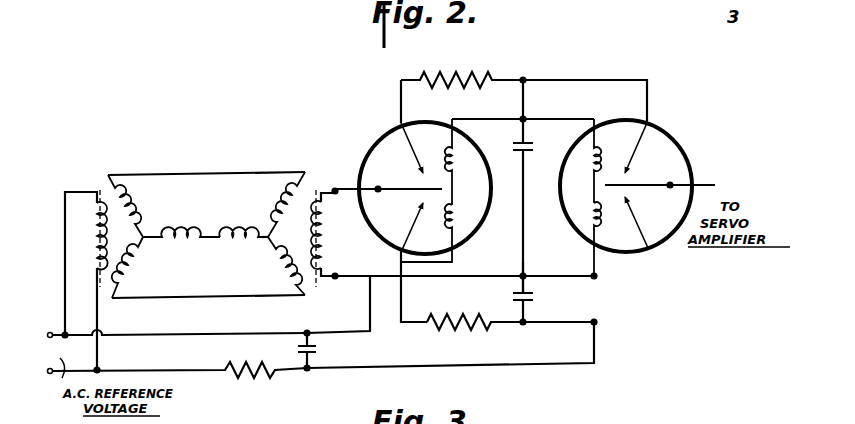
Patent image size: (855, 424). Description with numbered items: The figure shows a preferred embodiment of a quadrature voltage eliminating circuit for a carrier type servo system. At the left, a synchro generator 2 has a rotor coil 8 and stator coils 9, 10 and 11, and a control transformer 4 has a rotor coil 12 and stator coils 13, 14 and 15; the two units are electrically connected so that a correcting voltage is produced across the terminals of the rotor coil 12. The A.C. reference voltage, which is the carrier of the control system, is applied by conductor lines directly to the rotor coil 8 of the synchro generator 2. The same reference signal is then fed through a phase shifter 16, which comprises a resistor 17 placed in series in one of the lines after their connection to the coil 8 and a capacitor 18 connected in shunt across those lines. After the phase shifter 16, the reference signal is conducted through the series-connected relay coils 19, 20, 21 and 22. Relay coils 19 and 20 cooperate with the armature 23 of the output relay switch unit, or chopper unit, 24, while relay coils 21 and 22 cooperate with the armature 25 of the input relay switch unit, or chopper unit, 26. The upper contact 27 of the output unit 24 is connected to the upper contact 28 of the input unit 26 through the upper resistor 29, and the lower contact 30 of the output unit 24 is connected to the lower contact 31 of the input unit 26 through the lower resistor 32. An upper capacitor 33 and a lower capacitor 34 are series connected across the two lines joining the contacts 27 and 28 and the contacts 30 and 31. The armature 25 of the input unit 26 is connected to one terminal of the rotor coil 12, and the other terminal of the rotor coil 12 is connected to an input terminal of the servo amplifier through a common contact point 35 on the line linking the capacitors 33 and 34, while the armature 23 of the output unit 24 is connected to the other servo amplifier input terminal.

The synchro generator 2 is at (126, 250).
The control transformer 4 is at (298, 240).
The rotor coil 8 is at (99, 240).
The stator coil 9 is at (139, 266).
The stator coil 10 is at (180, 232).
The stator coil 11 is at (133, 207).
The rotor coil 12 is at (324, 232).
The stator coil 13 is at (284, 200).
The stator coil 14 is at (245, 232).
The stator coil 15 is at (282, 268).
The phase shifter 16 is at (258, 355).
The resistor 17 is at (258, 373).
The capacitor 18 is at (317, 350).
The relay coil 19 is at (592, 207).
The relay coil 20 is at (592, 153).
The relay coil 21 is at (456, 152).
The relay coil 22 is at (458, 222).
The armature 23 is at (668, 187).
The output relay switch unit 24 is at (657, 143).
The armature 25 is at (406, 190).
The input relay switch unit 26 is at (378, 152).
The upper contact 27 is at (628, 174).
The upper contact 28 is at (421, 174).
The upper resistor 29 is at (481, 79).
The lower contact 30 is at (626, 200).
The lower contact 31 is at (419, 208).
The lower resistor 32 is at (478, 320).
The upper capacitor 33 is at (533, 146).
The lower capacitor 34 is at (534, 297).
The common contact point 35 is at (527, 274).